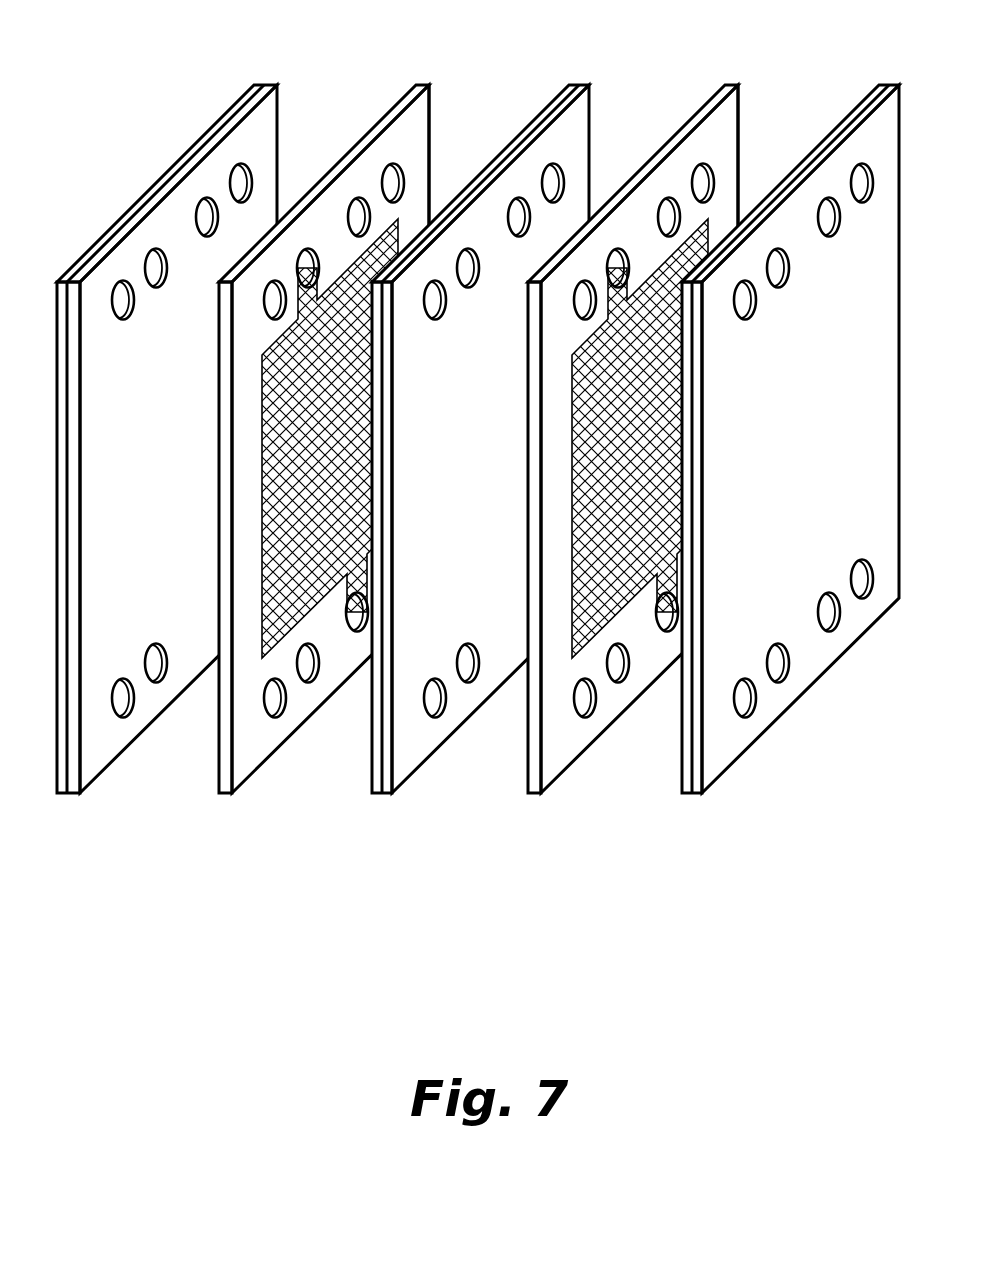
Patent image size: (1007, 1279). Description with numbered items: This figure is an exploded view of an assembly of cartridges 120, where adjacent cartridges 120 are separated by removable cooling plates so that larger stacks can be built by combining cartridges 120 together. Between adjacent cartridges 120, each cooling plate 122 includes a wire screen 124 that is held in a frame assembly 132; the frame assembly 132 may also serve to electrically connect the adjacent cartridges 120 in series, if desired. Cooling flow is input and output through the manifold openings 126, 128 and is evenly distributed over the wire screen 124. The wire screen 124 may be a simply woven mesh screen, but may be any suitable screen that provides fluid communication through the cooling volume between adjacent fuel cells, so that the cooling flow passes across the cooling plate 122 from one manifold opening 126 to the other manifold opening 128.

The cartridge 120 is at (302, 75).
The flow-field frame plate 122 is at (255, 767).
The wire screen 124 is at (262, 650).
The manifold opening 126 is at (308, 250).
The manifold opening 128 is at (357, 634).
The frame assembly 132 is at (429, 142).